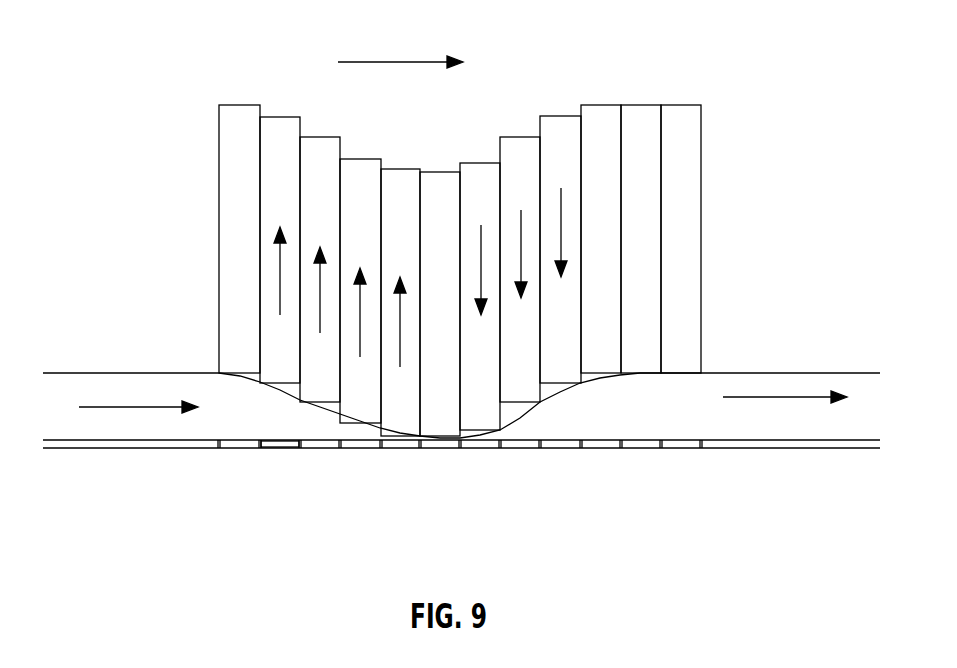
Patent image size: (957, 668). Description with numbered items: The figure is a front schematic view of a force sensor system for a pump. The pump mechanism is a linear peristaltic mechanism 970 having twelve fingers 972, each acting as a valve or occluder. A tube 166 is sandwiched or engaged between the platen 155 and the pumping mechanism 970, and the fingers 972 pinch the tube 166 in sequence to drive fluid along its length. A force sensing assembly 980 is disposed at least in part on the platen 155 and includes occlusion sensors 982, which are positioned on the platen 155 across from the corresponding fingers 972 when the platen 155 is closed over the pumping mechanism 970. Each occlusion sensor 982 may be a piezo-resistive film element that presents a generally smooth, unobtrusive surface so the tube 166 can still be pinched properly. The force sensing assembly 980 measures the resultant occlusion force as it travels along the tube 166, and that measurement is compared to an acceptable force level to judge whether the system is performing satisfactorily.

The linear peristaltic mechanism 970 is at (278, 93).
The fingers 972 is at (642, 105).
The tube 166 is at (826, 372).
The platen 155 is at (102, 450).
The force sensing assembly 980 is at (585, 468).
The occlusion sensors 982 is at (278, 450).